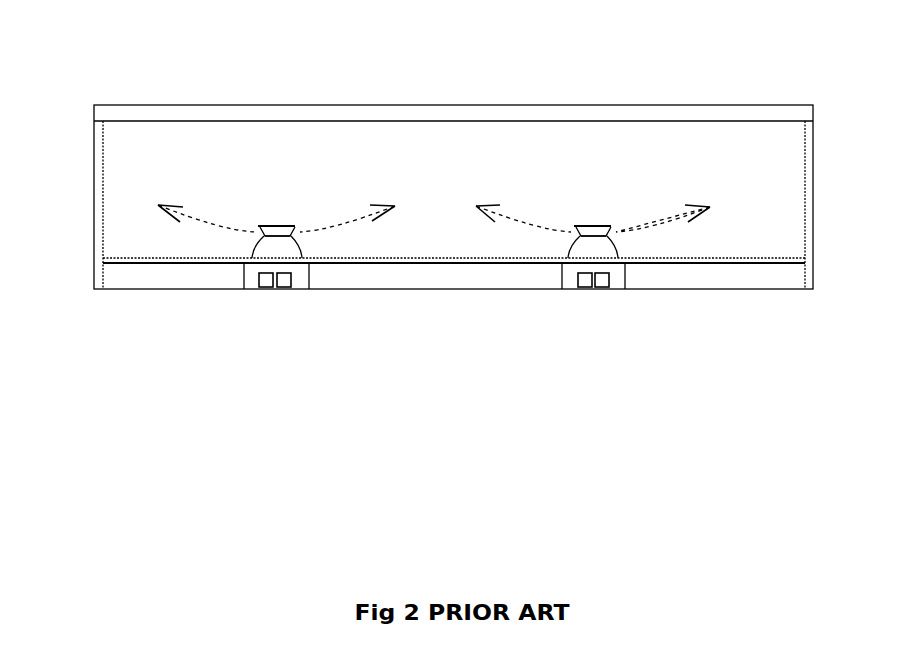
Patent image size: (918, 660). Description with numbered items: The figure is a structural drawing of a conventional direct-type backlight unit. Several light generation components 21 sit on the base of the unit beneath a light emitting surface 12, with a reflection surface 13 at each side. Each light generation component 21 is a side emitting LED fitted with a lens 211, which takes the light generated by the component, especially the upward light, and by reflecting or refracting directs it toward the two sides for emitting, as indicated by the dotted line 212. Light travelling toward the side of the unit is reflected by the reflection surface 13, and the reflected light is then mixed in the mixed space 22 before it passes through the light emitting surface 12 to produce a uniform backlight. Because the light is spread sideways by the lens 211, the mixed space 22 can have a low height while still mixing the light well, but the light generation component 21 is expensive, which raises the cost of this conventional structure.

The light emitting surface 12 is at (428, 117).
The reflection surface 13 is at (103, 201).
The light generation component 21 is at (277, 240).
The lens 211 is at (277, 240).
The dotted line 212 is at (218, 225).
The mixed space 22 is at (420, 178).